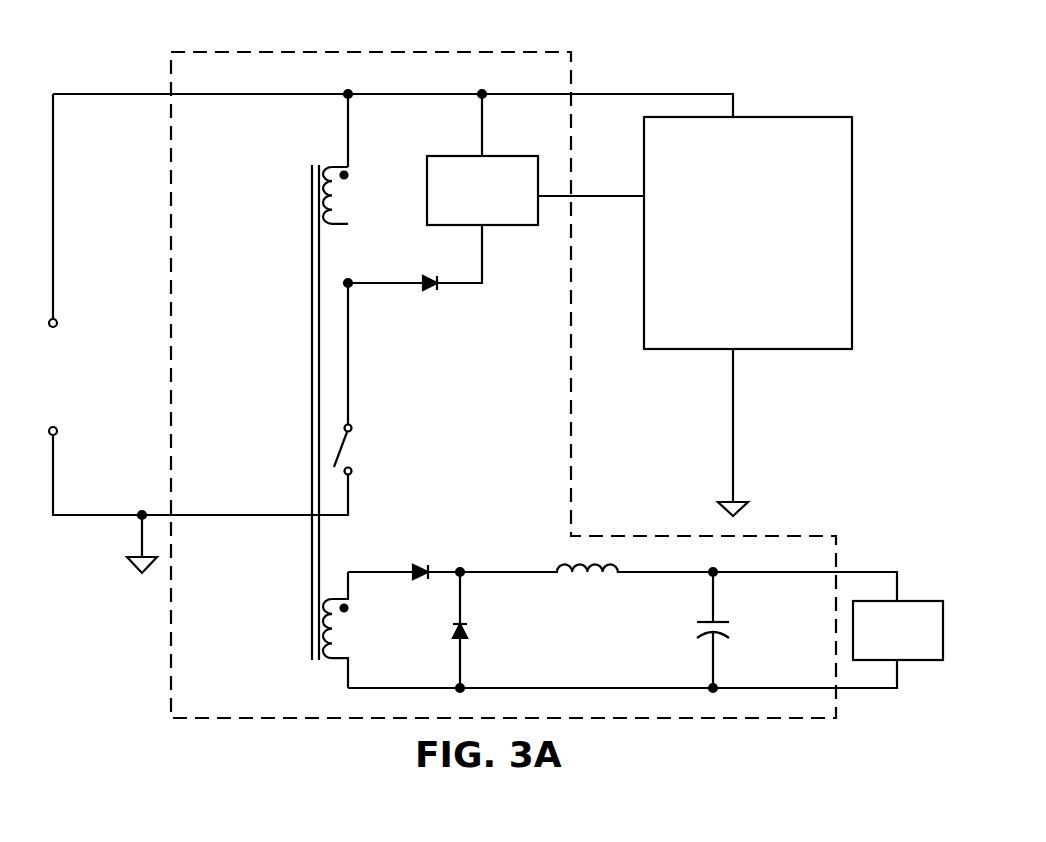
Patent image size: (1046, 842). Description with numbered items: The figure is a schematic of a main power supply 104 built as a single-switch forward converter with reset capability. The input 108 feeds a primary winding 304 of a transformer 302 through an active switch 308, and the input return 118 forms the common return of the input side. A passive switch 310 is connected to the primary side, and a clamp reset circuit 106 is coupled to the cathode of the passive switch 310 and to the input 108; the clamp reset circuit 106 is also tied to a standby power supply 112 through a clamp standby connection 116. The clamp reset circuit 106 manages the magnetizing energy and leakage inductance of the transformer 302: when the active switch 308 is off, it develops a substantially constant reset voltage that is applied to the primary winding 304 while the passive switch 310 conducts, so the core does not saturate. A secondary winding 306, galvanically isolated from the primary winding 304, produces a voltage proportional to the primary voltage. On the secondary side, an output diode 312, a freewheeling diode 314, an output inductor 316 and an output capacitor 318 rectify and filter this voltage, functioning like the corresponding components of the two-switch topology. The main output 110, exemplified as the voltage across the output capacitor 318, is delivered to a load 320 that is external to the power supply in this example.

The main power supply 104 is at (238, 42).
The clamp reset circuit 106 is at (420, 160).
The input 108 is at (70, 370).
The main output 110 is at (762, 620).
The standby power supply 112 is at (796, 112).
The clamp standby connection 116 is at (586, 203).
The input return 118 is at (128, 550).
The transformer T2 302 is at (304, 282).
The primary winding 304 is at (356, 205).
The secondary winding 306 is at (357, 630).
The active switch S3 308 is at (392, 436).
The passive switch D5 310 is at (444, 314).
The output diode D6 312 is at (408, 550).
The freewheeling diode D7 314 is at (490, 646).
The output inductor L2 316 is at (586, 591).
The output capacitor C2 318 is at (700, 612).
The load 320 is at (918, 599).